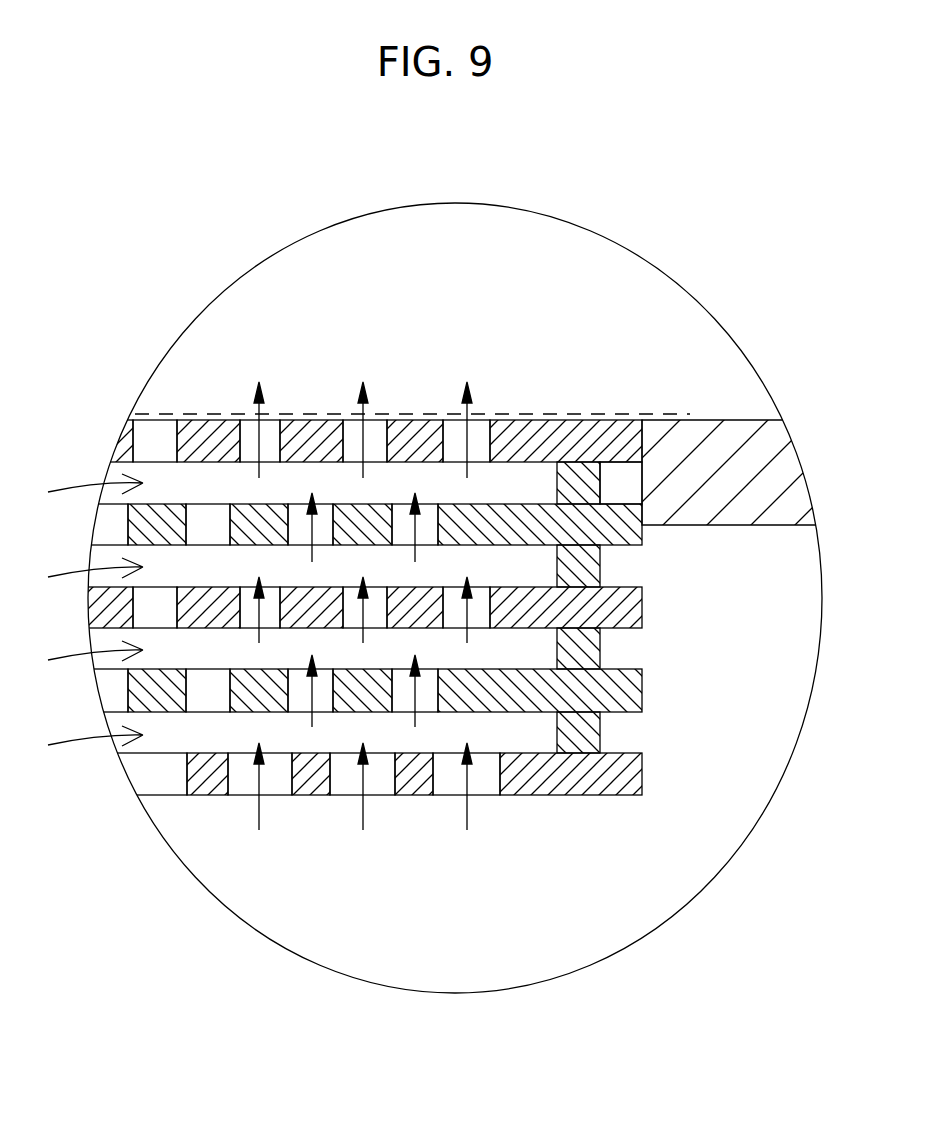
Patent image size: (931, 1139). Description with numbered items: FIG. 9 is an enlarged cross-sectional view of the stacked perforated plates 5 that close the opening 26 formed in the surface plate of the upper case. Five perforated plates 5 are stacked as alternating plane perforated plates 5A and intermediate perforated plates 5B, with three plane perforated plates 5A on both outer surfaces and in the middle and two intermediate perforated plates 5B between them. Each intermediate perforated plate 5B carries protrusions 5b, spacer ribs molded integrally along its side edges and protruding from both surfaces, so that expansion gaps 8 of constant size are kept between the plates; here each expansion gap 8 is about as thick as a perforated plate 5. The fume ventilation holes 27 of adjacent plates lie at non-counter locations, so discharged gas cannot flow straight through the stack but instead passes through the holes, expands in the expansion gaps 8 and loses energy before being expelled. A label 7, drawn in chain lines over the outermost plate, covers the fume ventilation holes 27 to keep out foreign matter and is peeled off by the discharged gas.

The perforated plate 5 is at (417, 622).
The plane perforated plate 5A is at (565, 447).
The intermediate perforated plate 5B is at (505, 518).
The protrusion 5b is at (600, 480).
The label 7 is at (313, 417).
The expansion gap 8 is at (83, 622).
The opening 26 is at (643, 447).
The fume ventilation hole 27 is at (209, 510).